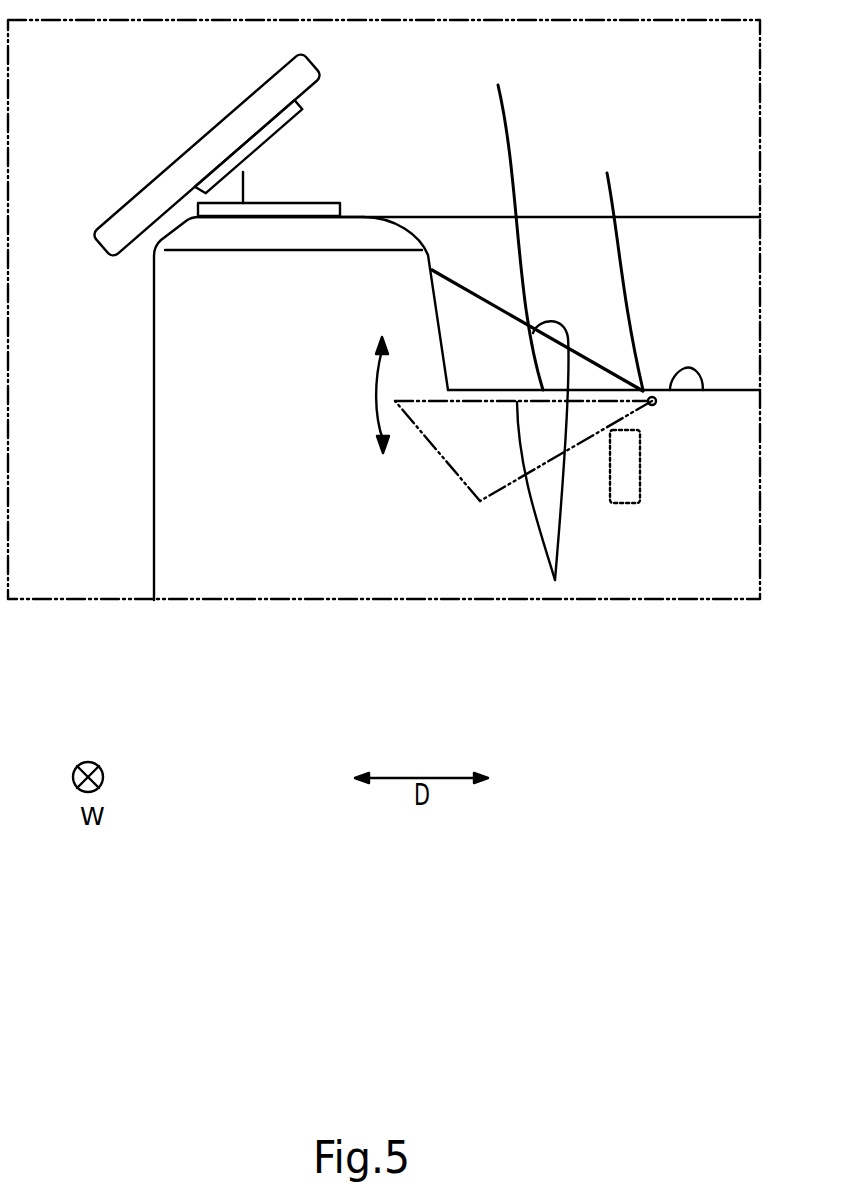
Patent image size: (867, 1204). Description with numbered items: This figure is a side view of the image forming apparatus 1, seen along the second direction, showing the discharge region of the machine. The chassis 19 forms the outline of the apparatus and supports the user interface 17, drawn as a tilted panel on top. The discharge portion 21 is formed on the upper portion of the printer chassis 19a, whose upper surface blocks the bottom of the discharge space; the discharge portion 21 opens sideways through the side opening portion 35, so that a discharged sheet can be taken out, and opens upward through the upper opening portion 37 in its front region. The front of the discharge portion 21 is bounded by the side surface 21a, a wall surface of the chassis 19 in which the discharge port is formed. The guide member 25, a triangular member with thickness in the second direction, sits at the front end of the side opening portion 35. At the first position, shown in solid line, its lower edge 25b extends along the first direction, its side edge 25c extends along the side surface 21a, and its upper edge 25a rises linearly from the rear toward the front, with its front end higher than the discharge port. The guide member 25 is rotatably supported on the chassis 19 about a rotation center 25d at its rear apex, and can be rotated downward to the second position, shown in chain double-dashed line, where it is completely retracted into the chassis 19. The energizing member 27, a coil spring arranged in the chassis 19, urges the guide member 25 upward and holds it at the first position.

The image forming apparatus 1 is at (610, 107).
The user interface 17 is at (167, 172).
The chassis 19 is at (288, 462).
The printer chassis 19a is at (296, 530).
The discharge portion 21 is at (675, 275).
The side surface 21a is at (442, 327).
The guide member 25 is at (502, 367).
The upper edge 25a is at (555, 580).
The lower edge 25b is at (509, 221).
The side edge 25c is at (440, 357).
The rotation center 25d is at (615, 265).
The energizing member 27 is at (625, 503).
The side opening portion 35 is at (703, 390).
The upper opening portion 37 is at (568, 217).